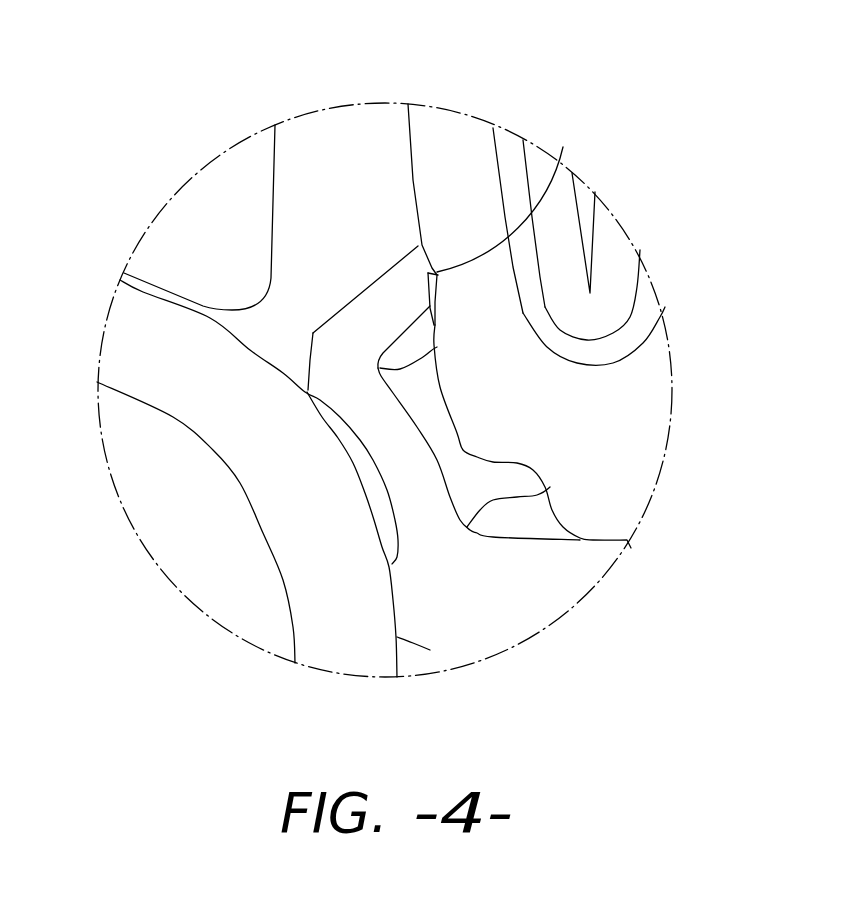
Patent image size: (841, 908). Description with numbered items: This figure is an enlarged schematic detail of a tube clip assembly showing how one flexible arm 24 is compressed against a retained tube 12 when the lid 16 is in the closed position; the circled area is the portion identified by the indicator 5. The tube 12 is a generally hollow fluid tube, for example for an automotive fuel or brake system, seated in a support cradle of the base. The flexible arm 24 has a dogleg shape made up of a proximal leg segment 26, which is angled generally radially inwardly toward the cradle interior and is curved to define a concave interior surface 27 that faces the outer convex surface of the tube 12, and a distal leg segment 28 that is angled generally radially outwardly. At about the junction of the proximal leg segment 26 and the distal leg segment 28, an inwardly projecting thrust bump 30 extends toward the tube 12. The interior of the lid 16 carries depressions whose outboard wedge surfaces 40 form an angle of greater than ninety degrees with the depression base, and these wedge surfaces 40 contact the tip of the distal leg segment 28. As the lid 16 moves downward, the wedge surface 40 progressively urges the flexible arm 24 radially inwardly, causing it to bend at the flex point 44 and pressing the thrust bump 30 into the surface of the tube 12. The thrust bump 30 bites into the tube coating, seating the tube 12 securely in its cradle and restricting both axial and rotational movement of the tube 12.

The tube 12 is at (134, 342).
The lid 16 is at (408, 122).
The outboard wedge surface 40 is at (408, 165).
The section line / view indicator 5 is at (563, 147).
The flexible arm 24 is at (330, 313).
The distal leg segment 28 is at (373, 278).
The flex point 44 is at (437, 347).
The thrust bump 30 is at (305, 391).
The proximal leg segment 26 is at (385, 450).
The concave interior surface 27 is at (388, 493).